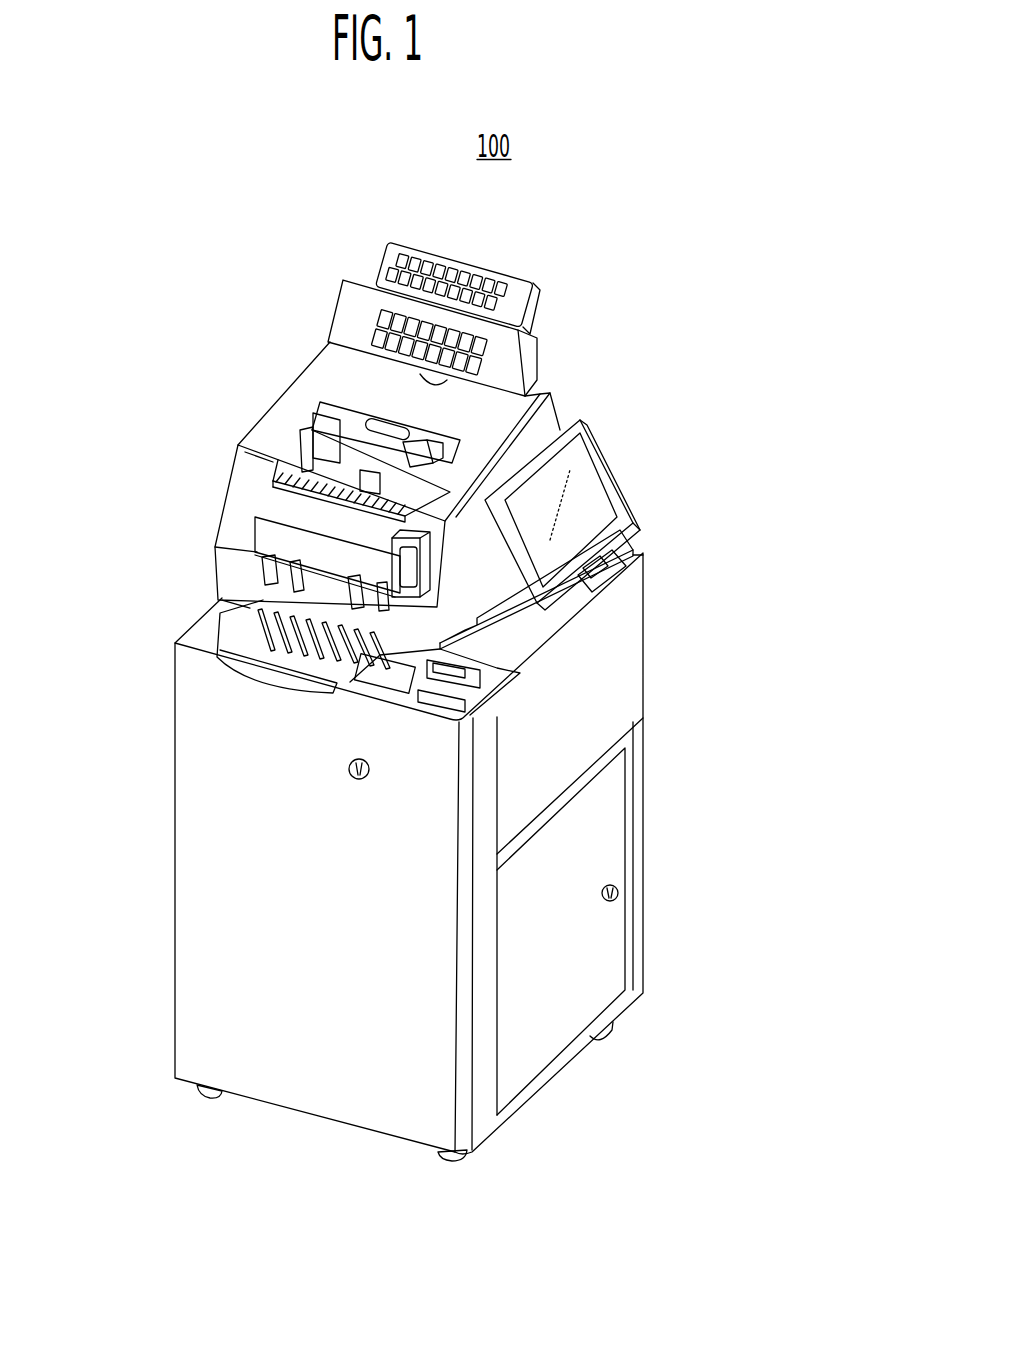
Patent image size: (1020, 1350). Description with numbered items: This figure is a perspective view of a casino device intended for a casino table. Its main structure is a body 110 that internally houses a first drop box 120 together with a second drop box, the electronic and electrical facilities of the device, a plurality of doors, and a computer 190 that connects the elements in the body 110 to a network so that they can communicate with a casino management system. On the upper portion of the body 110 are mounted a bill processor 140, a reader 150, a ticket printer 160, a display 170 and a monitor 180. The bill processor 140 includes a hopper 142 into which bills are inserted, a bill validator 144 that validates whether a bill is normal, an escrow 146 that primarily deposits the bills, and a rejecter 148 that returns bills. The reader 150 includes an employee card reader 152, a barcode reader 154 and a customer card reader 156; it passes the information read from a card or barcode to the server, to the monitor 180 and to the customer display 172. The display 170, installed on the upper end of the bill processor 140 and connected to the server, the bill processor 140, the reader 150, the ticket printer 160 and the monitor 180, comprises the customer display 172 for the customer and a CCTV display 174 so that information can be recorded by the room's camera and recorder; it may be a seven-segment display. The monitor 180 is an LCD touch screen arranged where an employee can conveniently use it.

The body 110 is at (667, 838).
The first drop box 120 is at (240, 830).
The bill processor 140 is at (215, 422).
The hopper 142 is at (312, 428).
The bill validator 144 is at (298, 468).
The escrow 146 is at (275, 628).
The rejecter 148 is at (285, 582).
The reader 150 is at (587, 629).
The employee card reader 152 is at (620, 557).
The barcode reader 154 is at (430, 592).
The customer card reader 156 is at (483, 660).
The ticket printer 160 is at (497, 679).
The display 170 is at (485, 294).
The customer display 172 is at (527, 357).
The CCTV display 174 is at (480, 268).
The monitor 180 is at (573, 498).
The computer 190 is at (563, 748).